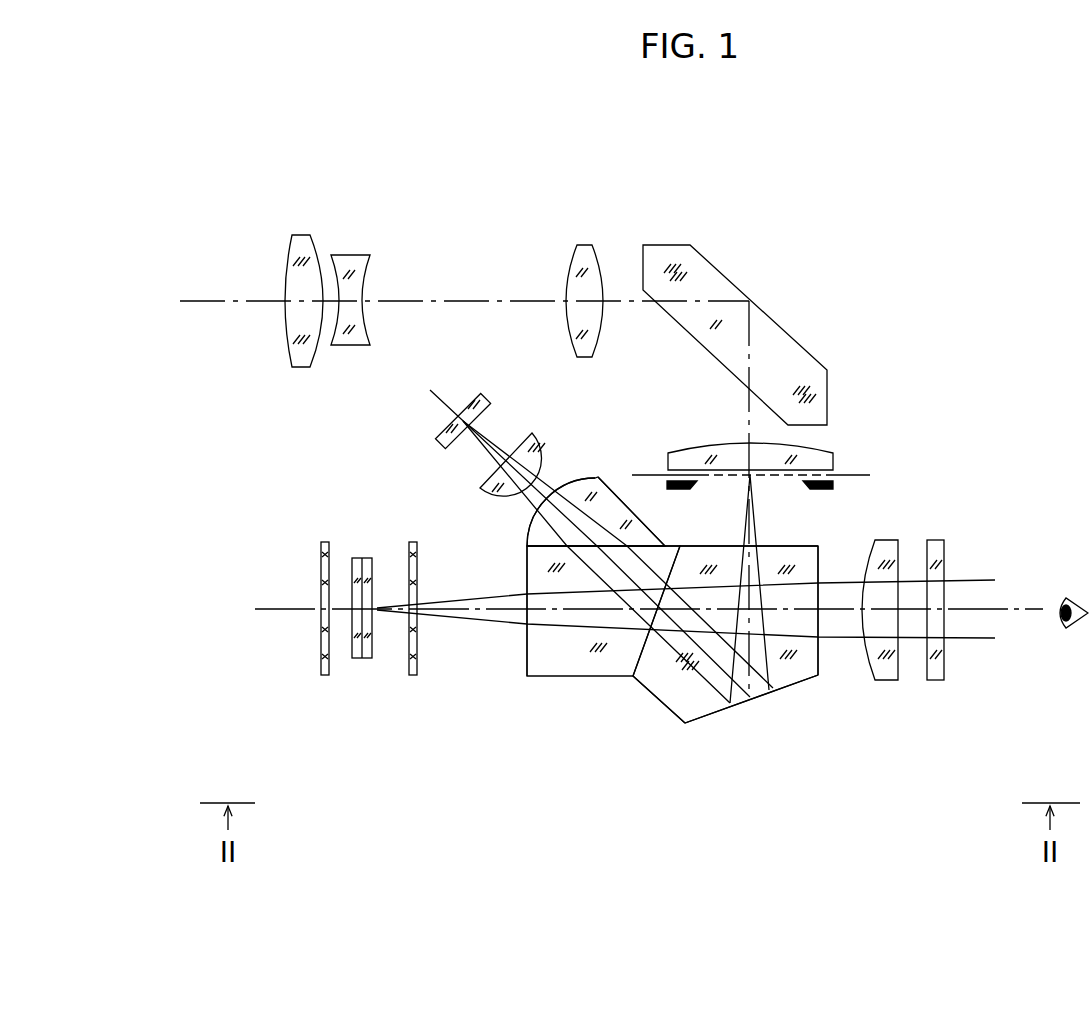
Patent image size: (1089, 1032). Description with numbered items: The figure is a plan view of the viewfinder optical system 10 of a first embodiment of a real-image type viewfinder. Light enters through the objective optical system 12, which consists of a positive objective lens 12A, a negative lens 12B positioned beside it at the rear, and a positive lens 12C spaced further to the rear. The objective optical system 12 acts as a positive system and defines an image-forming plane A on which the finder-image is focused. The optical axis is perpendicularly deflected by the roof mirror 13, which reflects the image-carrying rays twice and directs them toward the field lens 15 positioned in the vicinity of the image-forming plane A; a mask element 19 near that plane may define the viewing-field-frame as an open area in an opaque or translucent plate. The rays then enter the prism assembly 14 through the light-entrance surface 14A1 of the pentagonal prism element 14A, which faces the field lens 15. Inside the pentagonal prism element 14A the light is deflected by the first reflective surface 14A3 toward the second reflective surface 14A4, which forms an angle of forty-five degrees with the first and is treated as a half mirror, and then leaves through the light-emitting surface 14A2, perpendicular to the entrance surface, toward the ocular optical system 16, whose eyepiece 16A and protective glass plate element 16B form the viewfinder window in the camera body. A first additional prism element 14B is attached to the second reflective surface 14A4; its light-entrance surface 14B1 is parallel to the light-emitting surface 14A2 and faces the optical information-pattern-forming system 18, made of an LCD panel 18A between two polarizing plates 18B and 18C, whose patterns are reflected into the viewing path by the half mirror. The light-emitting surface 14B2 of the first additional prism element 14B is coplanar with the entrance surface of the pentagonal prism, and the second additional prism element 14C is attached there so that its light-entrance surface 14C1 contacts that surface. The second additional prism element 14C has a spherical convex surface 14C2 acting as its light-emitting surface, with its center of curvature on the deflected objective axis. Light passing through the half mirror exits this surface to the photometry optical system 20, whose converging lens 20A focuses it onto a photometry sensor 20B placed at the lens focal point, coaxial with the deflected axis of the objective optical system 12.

The viewfinder optical system 10 is at (778, 253).
The objective optical system 12 is at (455, 220).
The positive objective lens 12A is at (300, 236).
The negative lens 12B is at (350, 255).
The positive lens 12C is at (586, 246).
The roof mirror 13 is at (793, 339).
The prism assembly 14 is at (767, 700).
The pentagonal prism element 14A is at (665, 693).
The light-entrance surface 14A1 is at (838, 530).
The light-emitting surface 14A2 is at (823, 678).
The first reflective surface 14A3 is at (700, 703).
The second reflective surface 14A4 is at (650, 690).
The first additional prism element 14B is at (560, 658).
The light-entrance surface 14B1 is at (527, 653).
The light-emitting surface 14B2 is at (698, 523).
The second additional prism element 14C is at (618, 498).
The light-entrance surface 14C1 is at (526, 558).
The spherical convex surface 14C2 is at (576, 478).
The field lens 15 is at (833, 466).
The ocular optical system 16 is at (918, 692).
The eyepiece 16A is at (878, 540).
The protective glass plate element 16B is at (946, 660).
The optical information-pattern-forming system 18 is at (365, 676).
The LCD panel 18A is at (366, 558).
The polarizing plate 18B is at (320, 573).
The polarizing plate 18C is at (418, 573).
The mask element 19 is at (750, 589).
The photometry optical system 20 is at (512, 418).
The converging lens 20A is at (481, 487).
The photometry sensor 20B is at (438, 432).
The image-forming plane A is at (870, 475).